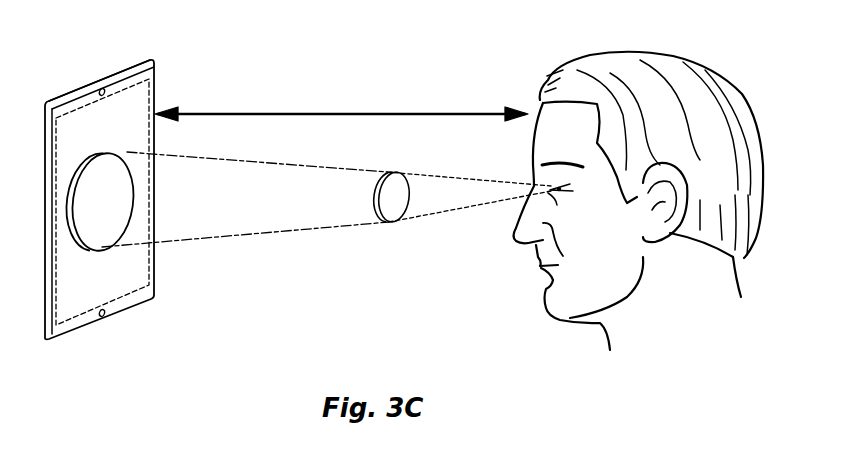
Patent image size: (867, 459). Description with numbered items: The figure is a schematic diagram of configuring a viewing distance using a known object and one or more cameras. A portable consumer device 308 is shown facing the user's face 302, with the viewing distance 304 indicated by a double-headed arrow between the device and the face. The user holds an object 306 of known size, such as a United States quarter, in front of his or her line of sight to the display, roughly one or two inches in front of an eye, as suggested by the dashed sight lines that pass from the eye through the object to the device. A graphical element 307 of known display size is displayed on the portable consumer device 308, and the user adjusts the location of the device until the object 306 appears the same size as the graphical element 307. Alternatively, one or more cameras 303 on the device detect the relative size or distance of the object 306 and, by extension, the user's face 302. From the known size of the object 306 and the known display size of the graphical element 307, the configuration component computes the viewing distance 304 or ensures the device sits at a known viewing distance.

The user's face 302 is at (663, 53).
The camera 303 is at (113, 78).
The viewing distance 304 is at (342, 114).
The object 306 is at (394, 218).
The graphical element 307 is at (102, 247).
The portable consumer device 308 is at (155, 62).